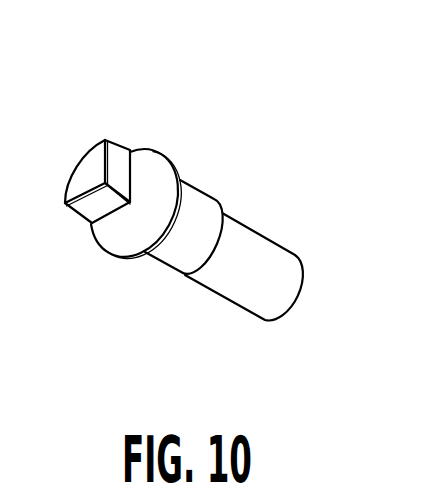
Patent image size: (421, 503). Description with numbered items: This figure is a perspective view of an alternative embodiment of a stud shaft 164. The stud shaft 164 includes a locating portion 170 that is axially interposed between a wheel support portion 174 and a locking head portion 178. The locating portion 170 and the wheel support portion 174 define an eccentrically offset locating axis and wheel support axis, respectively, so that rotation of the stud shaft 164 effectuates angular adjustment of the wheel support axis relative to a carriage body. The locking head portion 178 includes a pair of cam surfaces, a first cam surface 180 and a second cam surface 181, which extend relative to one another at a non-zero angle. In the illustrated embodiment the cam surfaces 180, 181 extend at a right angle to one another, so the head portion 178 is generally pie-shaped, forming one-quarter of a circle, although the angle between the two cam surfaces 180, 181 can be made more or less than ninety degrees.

The stud shaft 164 is at (186, 172).
The locating portion 170 is at (193, 203).
The wheel support portion 174 is at (253, 247).
The locking head portion 178 is at (92, 141).
The first cam surface 180 is at (90, 208).
The second cam surface 181 is at (117, 160).